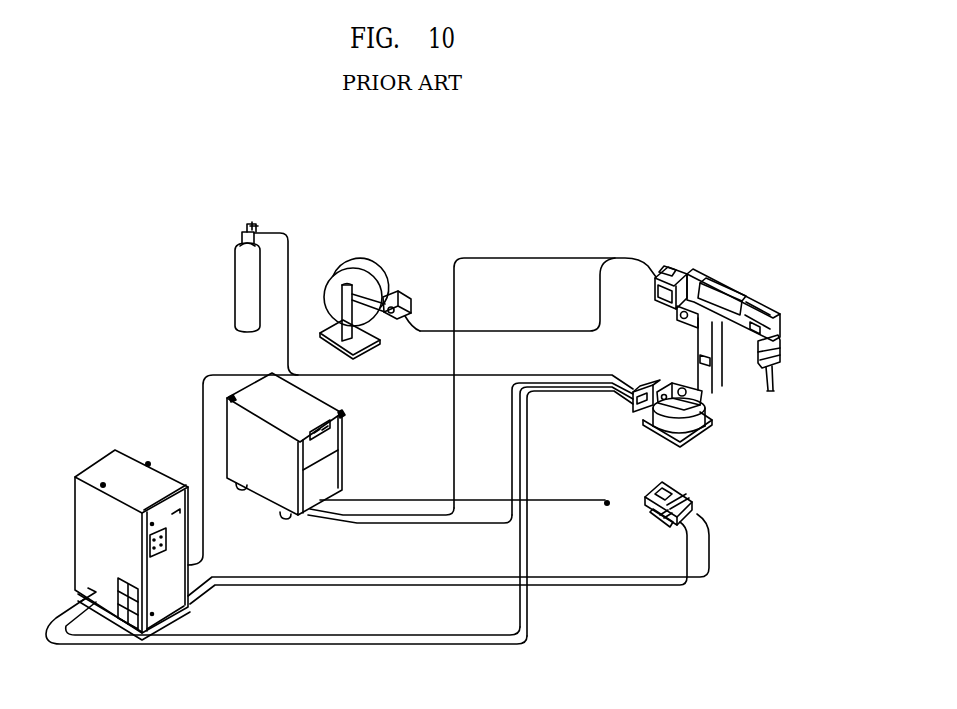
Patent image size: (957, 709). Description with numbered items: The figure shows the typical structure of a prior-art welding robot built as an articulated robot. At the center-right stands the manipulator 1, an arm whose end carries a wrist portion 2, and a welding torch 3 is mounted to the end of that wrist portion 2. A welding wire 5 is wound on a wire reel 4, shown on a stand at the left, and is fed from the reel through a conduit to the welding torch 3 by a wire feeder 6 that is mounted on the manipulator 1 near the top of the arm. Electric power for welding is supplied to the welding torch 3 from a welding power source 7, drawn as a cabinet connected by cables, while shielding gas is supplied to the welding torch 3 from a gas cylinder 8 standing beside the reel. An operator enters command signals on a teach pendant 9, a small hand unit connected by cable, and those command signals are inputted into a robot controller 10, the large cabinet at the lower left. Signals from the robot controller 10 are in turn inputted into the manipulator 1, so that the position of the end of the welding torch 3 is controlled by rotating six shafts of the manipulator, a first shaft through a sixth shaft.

The manipulator 1 is at (704, 330).
The wrist portion 2 is at (735, 378).
The welding torch 3 is at (772, 391).
The wire reel 4 is at (358, 268).
The welding wire 5 is at (428, 332).
The wire feeder 6 is at (680, 277).
The welding power source 7 is at (345, 452).
The gas cylinder 8 is at (233, 283).
The teach pendant 9 is at (655, 494).
The robot controller 10 is at (117, 458).